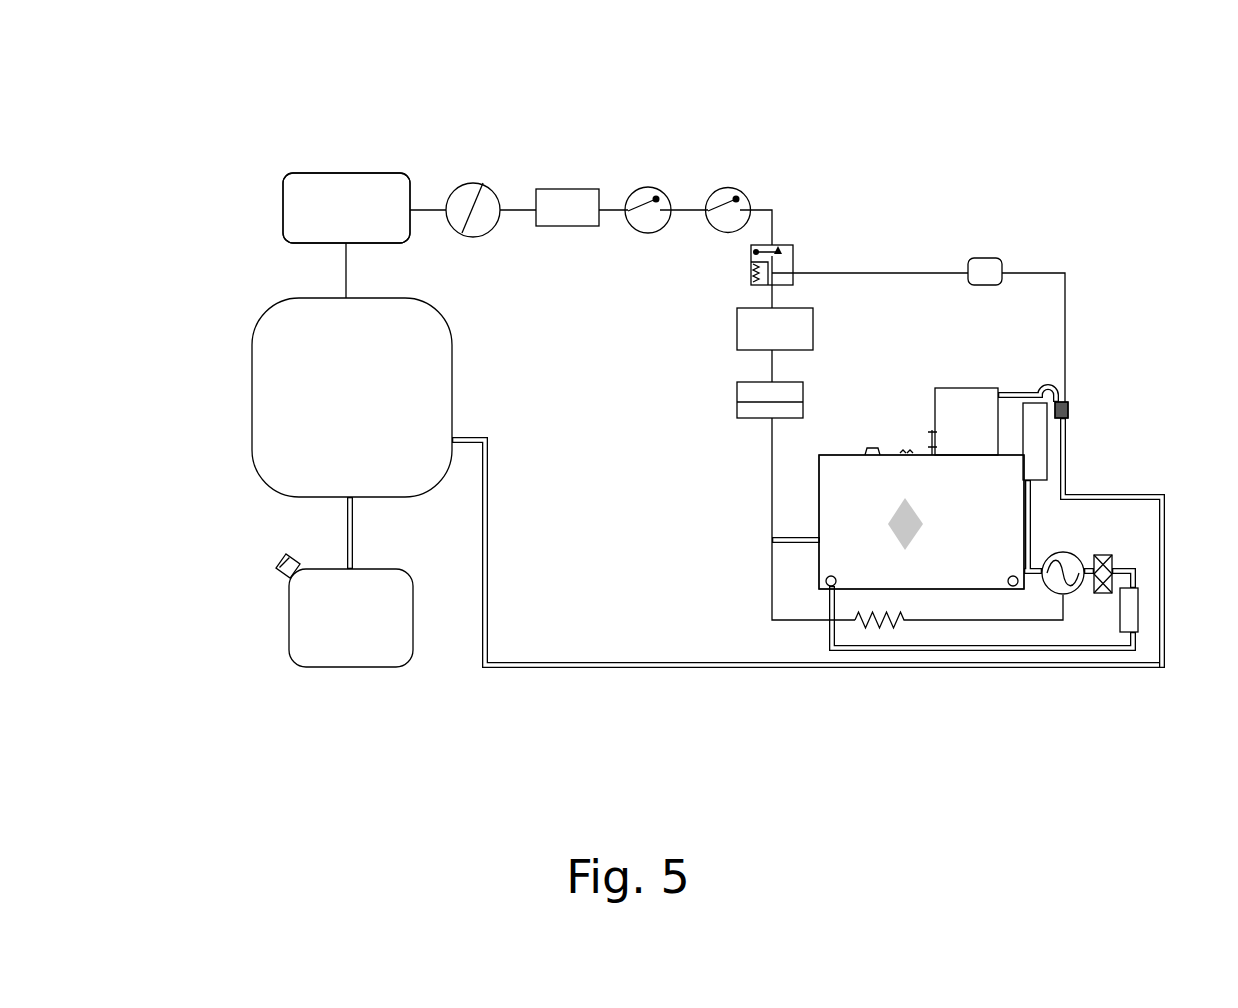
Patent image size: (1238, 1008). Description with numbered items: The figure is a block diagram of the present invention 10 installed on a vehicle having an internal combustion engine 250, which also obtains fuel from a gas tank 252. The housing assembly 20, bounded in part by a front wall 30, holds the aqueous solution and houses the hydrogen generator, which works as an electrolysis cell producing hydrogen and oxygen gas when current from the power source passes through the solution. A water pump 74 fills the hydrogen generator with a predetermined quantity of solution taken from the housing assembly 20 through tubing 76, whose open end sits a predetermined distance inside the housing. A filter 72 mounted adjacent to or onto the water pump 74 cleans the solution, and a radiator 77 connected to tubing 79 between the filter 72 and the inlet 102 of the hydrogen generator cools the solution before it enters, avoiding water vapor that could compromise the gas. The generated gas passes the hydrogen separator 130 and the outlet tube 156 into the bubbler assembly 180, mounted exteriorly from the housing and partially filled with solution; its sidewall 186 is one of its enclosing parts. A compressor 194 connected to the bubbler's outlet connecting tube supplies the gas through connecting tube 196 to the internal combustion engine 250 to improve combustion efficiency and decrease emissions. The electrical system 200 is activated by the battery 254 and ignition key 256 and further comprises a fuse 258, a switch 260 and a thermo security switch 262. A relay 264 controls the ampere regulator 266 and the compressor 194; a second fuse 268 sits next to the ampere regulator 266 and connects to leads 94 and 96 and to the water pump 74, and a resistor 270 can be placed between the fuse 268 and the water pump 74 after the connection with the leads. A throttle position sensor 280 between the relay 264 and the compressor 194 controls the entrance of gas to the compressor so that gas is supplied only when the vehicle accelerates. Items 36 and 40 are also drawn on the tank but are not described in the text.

The present invention 10 is at (1110, 210).
The housing assembly 20 is at (848, 445).
The front wall 30 is at (951, 522).
The outlet port 36 is at (1013, 586).
The fill fitting 40 is at (870, 448).
The filter 72 is at (1103, 555).
The water pump 74 is at (1062, 552).
The tubing 76 is at (1032, 574).
The radiator 77 is at (1138, 613).
The tubing 79 is at (937, 648).
The lead 94 is at (800, 533).
The lead 96 is at (797, 542).
The inlet 102 is at (826, 582).
The hydrogen separator 130 is at (951, 380).
The outlet tube 156 is at (1020, 398).
The bubbler assembly 180 is at (1050, 380).
The sidewall 186 is at (1047, 433).
The compressor 194 is at (1070, 406).
The connecting tube 196 is at (640, 670).
The electrical system 200 is at (340, 150).
The internal combustion engine 250 is at (252, 352).
The gas tank 252 is at (289, 630).
The battery 254 is at (283, 221).
The ignition key 256 is at (475, 183).
The fuse 258 is at (578, 189).
The switch 260 is at (648, 187).
The thermo security switch 262 is at (733, 187).
The relay 264 is at (794, 254).
The ampere regulator 266 is at (737, 326).
The fuse 268 is at (737, 396).
The resistor 270 is at (873, 622).
The throttle position sensor 280 is at (992, 258).